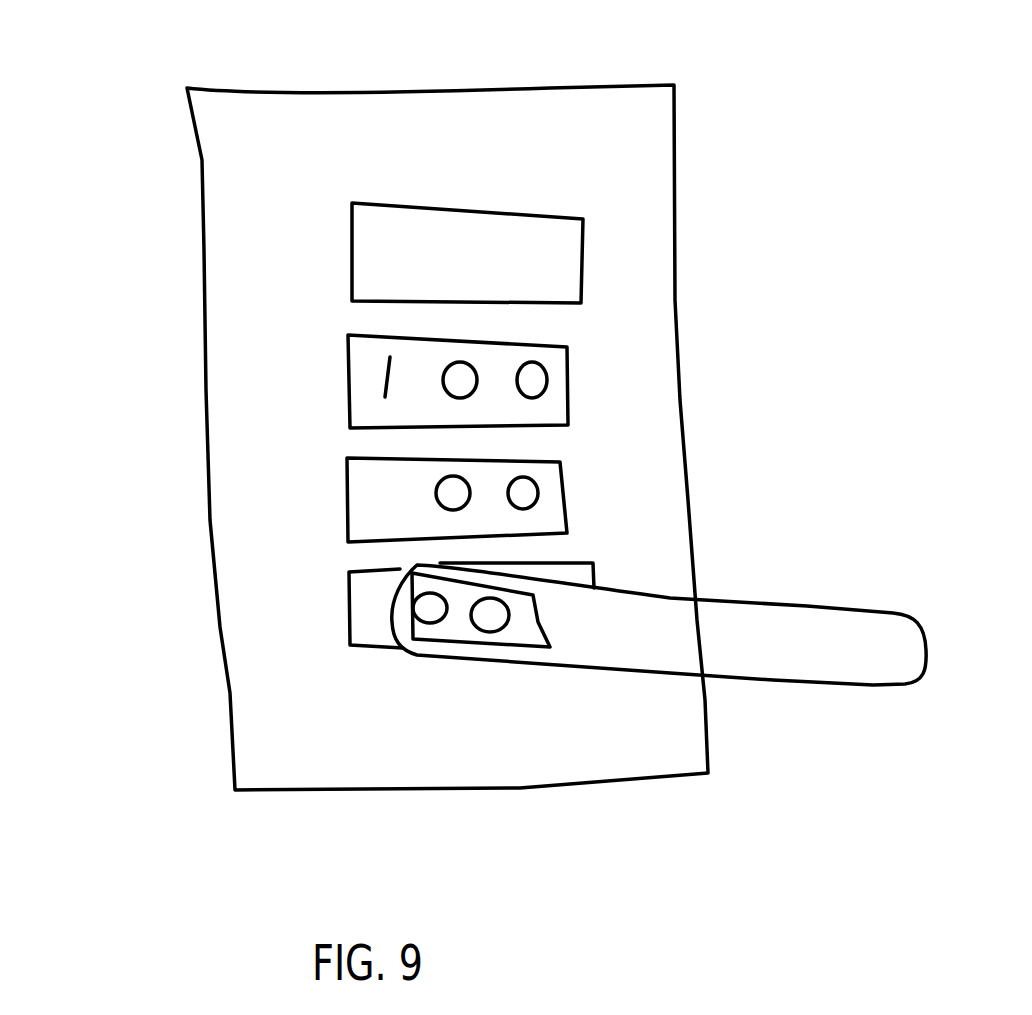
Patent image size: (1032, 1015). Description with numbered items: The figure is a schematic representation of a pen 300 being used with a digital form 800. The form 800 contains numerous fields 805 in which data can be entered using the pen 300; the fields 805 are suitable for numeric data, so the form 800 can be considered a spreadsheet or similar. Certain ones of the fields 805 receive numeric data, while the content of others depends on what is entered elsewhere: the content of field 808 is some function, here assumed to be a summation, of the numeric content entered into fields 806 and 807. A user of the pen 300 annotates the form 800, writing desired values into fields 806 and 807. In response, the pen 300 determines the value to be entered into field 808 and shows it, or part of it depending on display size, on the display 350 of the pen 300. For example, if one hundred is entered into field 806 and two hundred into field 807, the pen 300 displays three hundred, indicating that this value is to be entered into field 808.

The digital form 800 is at (633, 113).
The fields 805 is at (290, 385).
The field 806 is at (568, 385).
The field 807 is at (560, 490).
The field 808 is at (350, 617).
The pen 300 is at (805, 606).
The display 350 is at (503, 653).